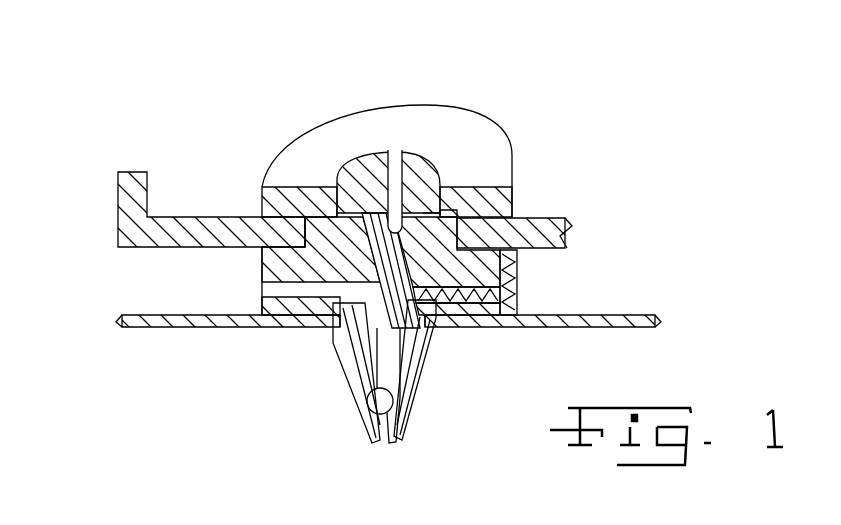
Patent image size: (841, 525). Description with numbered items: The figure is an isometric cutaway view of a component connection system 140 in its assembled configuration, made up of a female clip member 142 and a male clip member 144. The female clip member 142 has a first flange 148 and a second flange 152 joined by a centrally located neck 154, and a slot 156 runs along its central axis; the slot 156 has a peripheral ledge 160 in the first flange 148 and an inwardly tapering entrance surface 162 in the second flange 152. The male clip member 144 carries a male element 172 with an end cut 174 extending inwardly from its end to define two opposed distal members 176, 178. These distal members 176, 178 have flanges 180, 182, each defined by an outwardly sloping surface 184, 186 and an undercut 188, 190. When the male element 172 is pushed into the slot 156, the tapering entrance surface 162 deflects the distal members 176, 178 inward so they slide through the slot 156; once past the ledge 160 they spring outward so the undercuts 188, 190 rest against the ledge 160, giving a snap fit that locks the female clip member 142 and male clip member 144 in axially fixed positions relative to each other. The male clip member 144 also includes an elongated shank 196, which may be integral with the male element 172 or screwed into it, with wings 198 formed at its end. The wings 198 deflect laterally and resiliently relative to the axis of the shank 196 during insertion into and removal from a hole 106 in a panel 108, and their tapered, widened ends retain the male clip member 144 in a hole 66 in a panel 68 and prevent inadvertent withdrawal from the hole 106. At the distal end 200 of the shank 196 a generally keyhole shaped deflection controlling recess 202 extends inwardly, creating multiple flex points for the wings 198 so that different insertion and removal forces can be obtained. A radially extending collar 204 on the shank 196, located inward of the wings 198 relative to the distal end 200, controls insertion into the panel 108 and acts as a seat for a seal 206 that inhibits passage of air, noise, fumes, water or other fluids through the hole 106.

The hole 66 is at (570, 224).
The panel 68 is at (118, 200).
The hole 106 is at (340, 326).
The panel 108 is at (146, 328).
The component connection system 140 is at (374, 259).
The female clip member 142 is at (427, 211).
The male clip member 144 is at (423, 259).
The first flange 148 is at (488, 148).
The second flange 152 is at (520, 261).
The neck 154 is at (262, 272).
The slot 156 is at (460, 218).
The peripheral ledge 160 is at (306, 212).
The inwardly tapering entrance surface 162 is at (518, 277).
The male element 172 is at (262, 294).
The end cut 174 is at (395, 170).
The distal member 176 is at (442, 188).
The distal member 178 is at (262, 264).
The flange 180 is at (445, 168).
The flange 182 is at (386, 180).
The outwardly sloping surface 184 is at (443, 200).
The outwardly sloping surface 186 is at (350, 167).
The undercut 188 is at (445, 210).
The undercut 190 is at (348, 205).
The elongated shank 196 is at (407, 397).
The wings 198 is at (353, 383).
The distal end 200 is at (404, 448).
The deflection controlling recess 202 is at (365, 425).
The collar 204 is at (545, 328).
The seal 206 is at (478, 310).